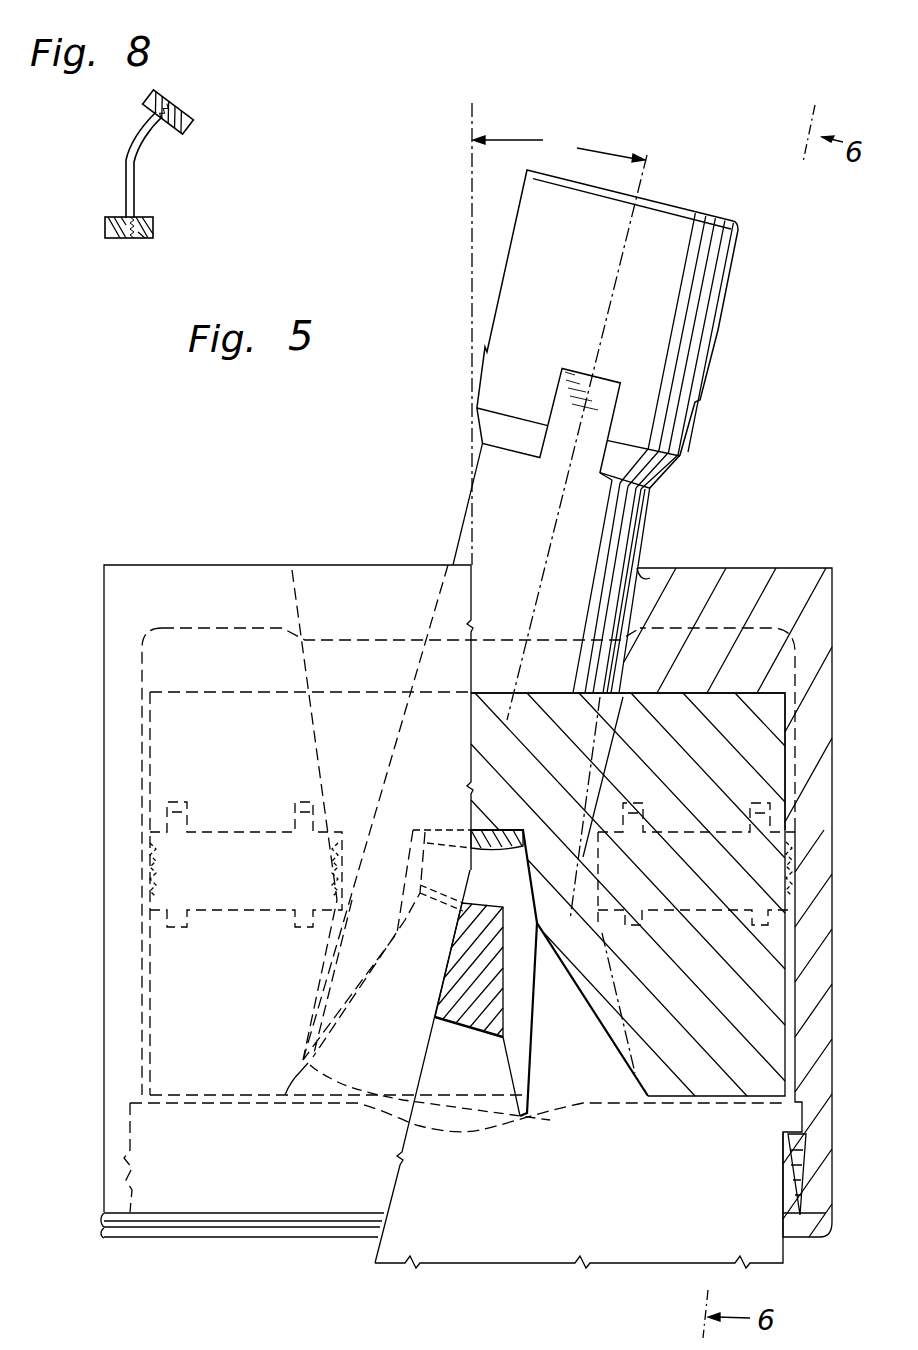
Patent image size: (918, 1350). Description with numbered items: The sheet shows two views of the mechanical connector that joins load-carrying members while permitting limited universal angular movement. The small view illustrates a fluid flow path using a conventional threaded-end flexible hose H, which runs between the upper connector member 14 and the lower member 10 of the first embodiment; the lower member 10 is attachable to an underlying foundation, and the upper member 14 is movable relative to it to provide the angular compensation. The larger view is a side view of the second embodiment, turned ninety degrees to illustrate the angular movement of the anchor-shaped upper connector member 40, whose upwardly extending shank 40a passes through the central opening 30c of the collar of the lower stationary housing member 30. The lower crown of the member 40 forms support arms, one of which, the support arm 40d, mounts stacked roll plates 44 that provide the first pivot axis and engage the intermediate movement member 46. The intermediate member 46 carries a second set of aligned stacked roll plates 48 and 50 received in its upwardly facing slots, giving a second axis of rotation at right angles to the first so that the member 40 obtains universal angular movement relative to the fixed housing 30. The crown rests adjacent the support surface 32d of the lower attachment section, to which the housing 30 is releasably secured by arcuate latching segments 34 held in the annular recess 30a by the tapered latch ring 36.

In FIG. 8, the upper connector member 14 is at (190, 124).
In FIG. 8, the flexible hose H is at (125, 160).
In FIG. 8, the lower member 10 is at (153, 223).
In FIG. 5, the upper connector member 40 is at (490, 490).
In FIG. 5, the shank 40a is at (647, 510).
In FIG. 5, the central opening 30c is at (703, 608).
In FIG. 5, the intermediate movement member 46 is at (551, 697).
In FIG. 5, the stacked roll plates 50 is at (220, 840).
In FIG. 5, the stacked roll plates 44 is at (470, 832).
In FIG. 5, the stacked roll plates 48 is at (707, 897).
In FIG. 5, the lower stationary housing member 30 is at (800, 983).
In FIG. 5, the support arm 40d is at (463, 1013).
In FIG. 5, the support surface 32d is at (633, 1095).
In FIG. 5, the annular recess 30a is at (783, 1150).
In FIG. 5, the latching segments 34 is at (788, 1172).
In FIG. 5, the tapered latch ring 36 is at (812, 1223).